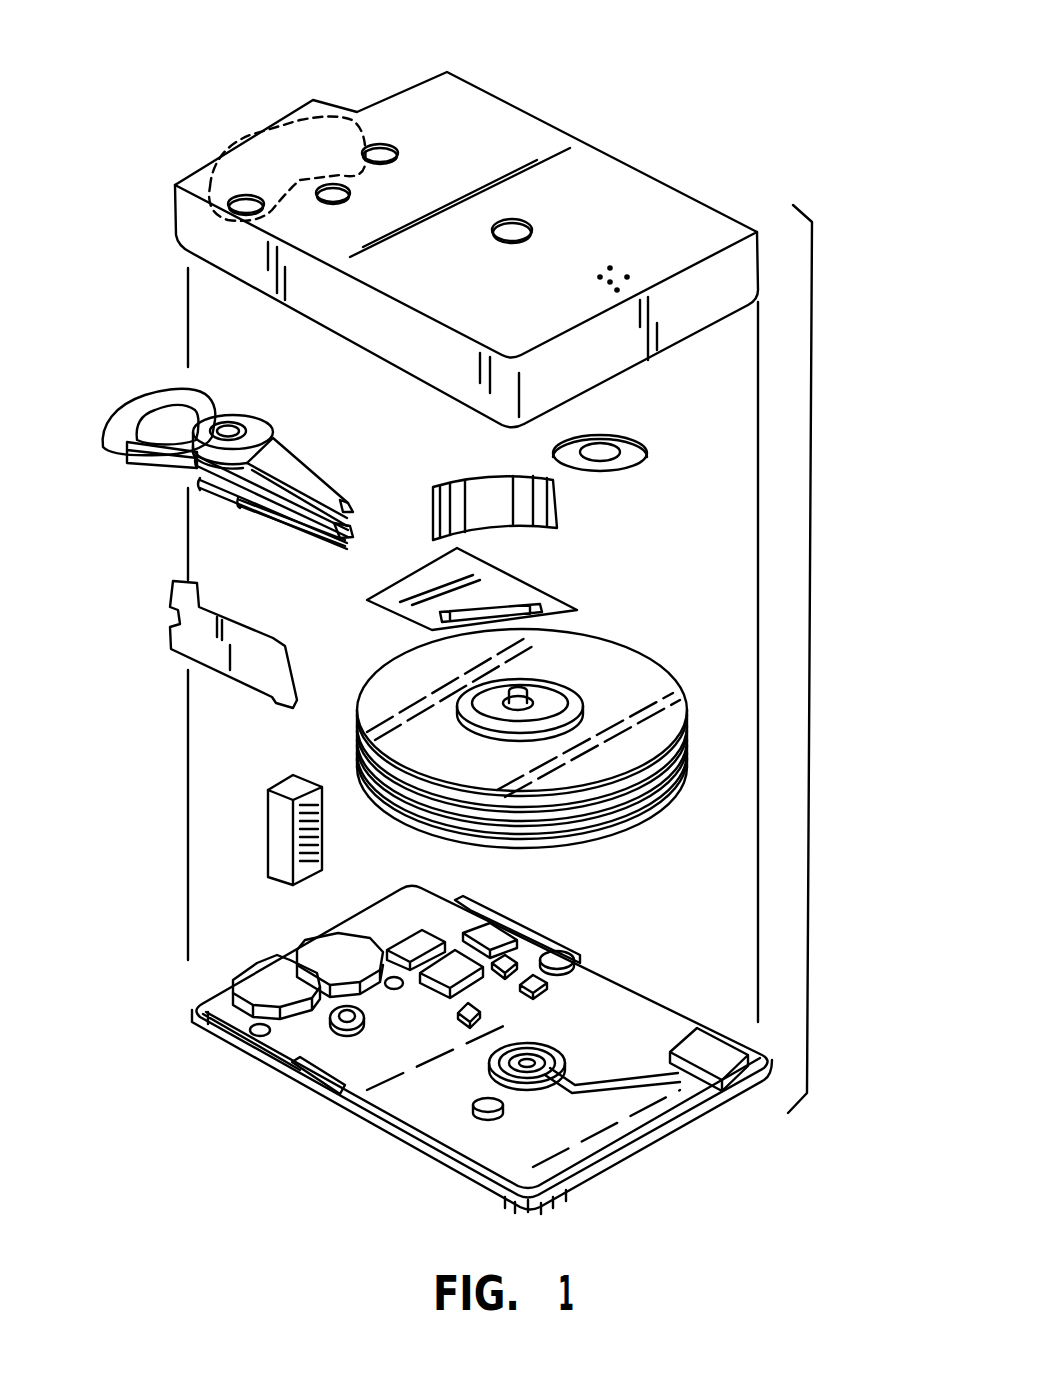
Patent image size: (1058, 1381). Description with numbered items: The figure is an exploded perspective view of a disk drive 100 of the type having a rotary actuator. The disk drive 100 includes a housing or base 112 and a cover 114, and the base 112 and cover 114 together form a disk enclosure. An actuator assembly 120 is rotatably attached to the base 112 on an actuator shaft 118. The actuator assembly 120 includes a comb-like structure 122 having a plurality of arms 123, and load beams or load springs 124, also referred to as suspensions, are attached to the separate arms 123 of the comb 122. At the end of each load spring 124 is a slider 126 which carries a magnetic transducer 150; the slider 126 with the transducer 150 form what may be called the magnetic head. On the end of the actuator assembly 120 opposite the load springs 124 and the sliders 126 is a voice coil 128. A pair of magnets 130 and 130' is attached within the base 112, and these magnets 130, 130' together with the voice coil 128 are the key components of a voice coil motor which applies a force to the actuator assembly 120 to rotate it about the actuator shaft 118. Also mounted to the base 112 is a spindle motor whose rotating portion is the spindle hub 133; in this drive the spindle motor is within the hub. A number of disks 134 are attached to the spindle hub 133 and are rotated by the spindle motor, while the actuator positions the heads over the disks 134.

The disk drive 100 is at (622, 103).
The base 112 is at (653, 1020).
The cover 114 is at (637, 190).
The actuator shaft 118 is at (230, 425).
The actuator assembly 120 is at (160, 460).
The comb-like structure 122 is at (255, 517).
The arms 123 is at (267, 423).
The load springs 124 is at (313, 477).
The slider 126 is at (347, 503).
The voice coil 128 is at (135, 410).
The magnet 130 is at (234, 954).
The magnet 130' is at (279, 148).
The spindle hub 133 is at (537, 682).
The disks 134 is at (653, 680).
The magnetic transducer 150 is at (358, 510).